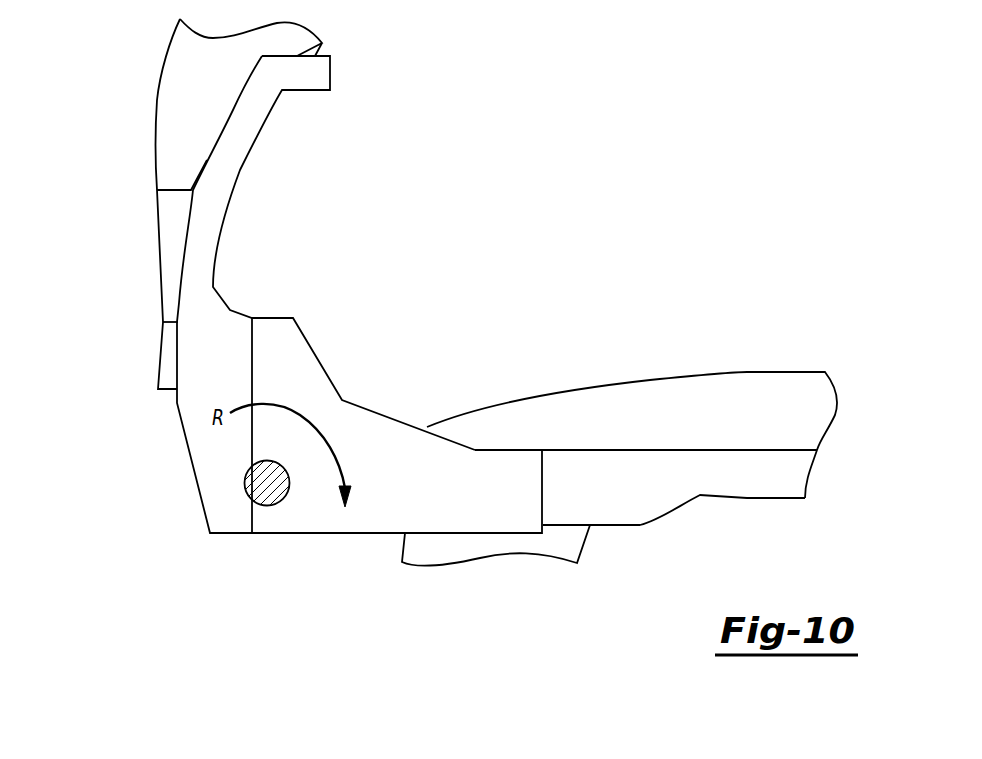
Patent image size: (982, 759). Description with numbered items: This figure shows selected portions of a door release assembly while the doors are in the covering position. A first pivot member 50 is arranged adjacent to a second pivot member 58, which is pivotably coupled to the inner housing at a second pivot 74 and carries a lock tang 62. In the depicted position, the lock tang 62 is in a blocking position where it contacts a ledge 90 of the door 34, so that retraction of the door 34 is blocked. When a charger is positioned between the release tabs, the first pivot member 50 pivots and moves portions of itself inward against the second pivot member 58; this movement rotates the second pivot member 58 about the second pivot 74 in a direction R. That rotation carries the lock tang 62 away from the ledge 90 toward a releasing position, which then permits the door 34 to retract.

The door 34 is at (728, 403).
The first pivot member 50 is at (177, 95).
The second pivot member 58 is at (216, 448).
The lock tang 62 is at (534, 450).
The second pivot 74 is at (267, 484).
The ledge 90 is at (508, 453).